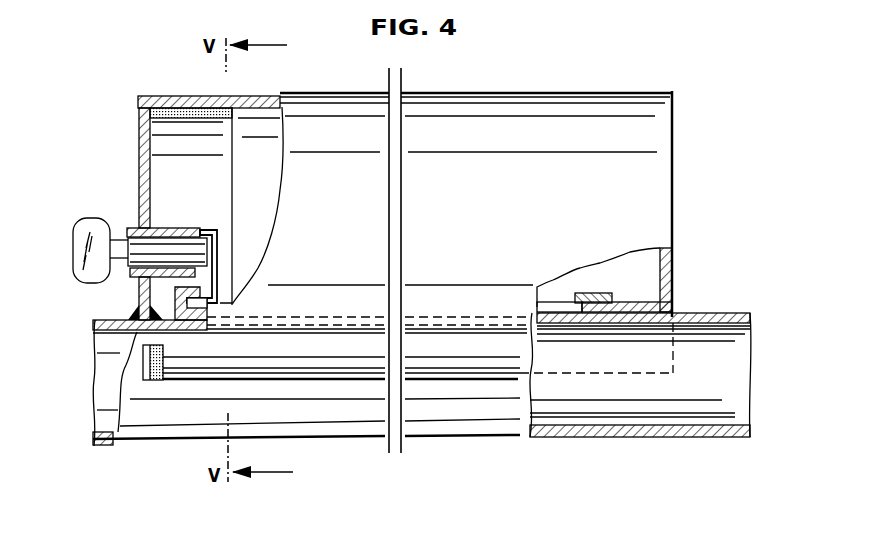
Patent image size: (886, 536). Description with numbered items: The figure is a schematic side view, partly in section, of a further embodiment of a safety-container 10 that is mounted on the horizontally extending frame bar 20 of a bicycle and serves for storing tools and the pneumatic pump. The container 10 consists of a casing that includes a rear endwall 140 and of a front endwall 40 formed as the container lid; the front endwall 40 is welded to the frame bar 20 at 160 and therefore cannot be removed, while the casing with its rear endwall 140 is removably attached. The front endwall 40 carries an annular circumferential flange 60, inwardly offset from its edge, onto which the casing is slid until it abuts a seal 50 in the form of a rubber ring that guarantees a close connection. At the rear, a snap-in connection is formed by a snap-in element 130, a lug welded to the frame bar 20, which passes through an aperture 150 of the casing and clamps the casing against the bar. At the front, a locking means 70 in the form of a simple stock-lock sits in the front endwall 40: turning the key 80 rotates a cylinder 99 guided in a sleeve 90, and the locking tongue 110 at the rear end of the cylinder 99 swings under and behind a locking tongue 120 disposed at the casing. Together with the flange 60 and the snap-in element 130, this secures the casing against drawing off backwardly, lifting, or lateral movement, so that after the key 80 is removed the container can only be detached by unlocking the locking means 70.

The safety-container 10 is at (590, 88).
The frame bar 20 is at (165, 418).
The front endwall 40 is at (139, 127).
The seal 50 is at (152, 97).
The annular circumferential flange 60 is at (190, 119).
The locking means 70 is at (186, 222).
The key 80 is at (98, 222).
The sleeve 90 is at (136, 228).
The cylinder 99 is at (137, 285).
The locking tongue 110 is at (212, 242).
The locking tongue 120 is at (204, 322).
The snap-in element 130 is at (598, 293).
The rear endwall 140 is at (673, 263).
The aperture 150 is at (560, 302).
The weld 160 is at (143, 356).